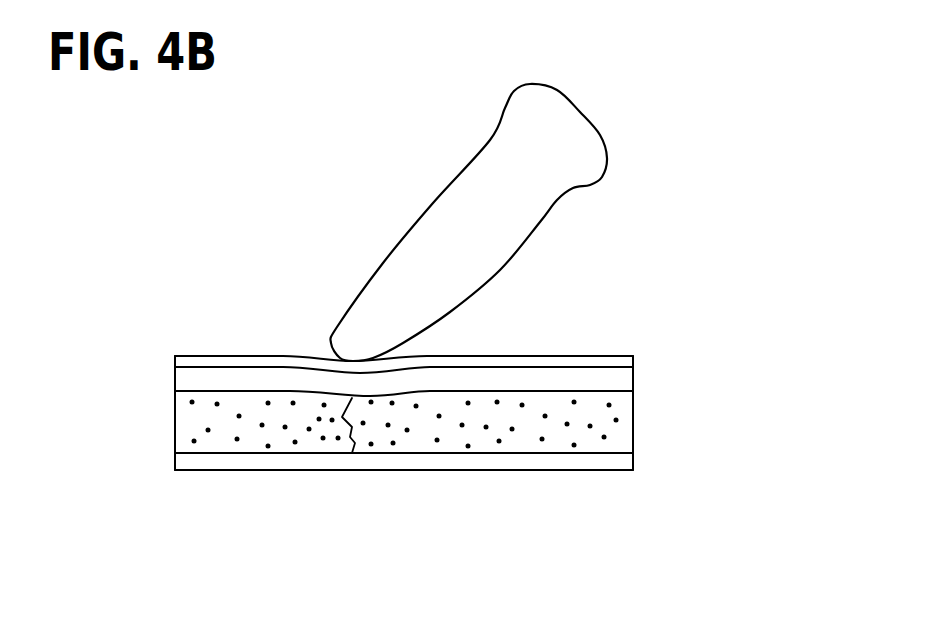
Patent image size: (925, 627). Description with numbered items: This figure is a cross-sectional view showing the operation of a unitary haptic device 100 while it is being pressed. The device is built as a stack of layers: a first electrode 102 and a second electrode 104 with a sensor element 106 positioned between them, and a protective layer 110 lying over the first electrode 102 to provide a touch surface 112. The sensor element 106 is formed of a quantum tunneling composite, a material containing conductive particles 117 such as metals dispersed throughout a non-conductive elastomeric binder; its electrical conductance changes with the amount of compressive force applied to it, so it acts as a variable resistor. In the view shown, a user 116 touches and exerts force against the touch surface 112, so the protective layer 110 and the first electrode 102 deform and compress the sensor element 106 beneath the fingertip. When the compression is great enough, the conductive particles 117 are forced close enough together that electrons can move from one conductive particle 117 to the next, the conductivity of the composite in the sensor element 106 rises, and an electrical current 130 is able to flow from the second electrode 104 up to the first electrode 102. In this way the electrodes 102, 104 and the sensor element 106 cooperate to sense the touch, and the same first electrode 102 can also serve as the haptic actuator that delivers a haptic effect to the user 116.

The unitary haptic device 100 is at (558, 320).
The first electrode 102 is at (633, 379).
The second electrode 104 is at (633, 462).
The sensor element 106 is at (633, 424).
The protective layer 110 is at (633, 361).
The touch surface 112 is at (258, 355).
The user 116 is at (420, 225).
The conductive particles 117 is at (183, 443).
The electrical current 130 is at (348, 438).